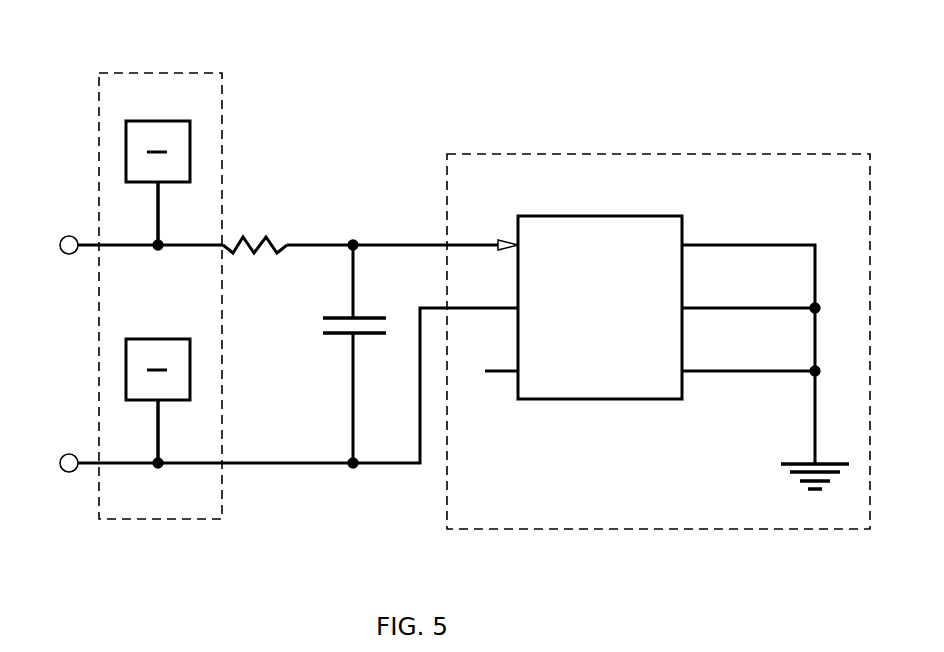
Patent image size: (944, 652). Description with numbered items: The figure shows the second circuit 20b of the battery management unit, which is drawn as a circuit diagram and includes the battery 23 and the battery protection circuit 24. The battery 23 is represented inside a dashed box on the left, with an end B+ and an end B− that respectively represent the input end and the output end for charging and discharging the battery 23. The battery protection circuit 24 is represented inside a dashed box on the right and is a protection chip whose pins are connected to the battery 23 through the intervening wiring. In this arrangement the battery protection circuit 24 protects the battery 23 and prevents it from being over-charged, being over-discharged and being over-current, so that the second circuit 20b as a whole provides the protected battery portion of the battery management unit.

The second circuit 20b is at (538, 60).
The battery 23 is at (138, 73).
The battery protection circuit 24 is at (660, 155).